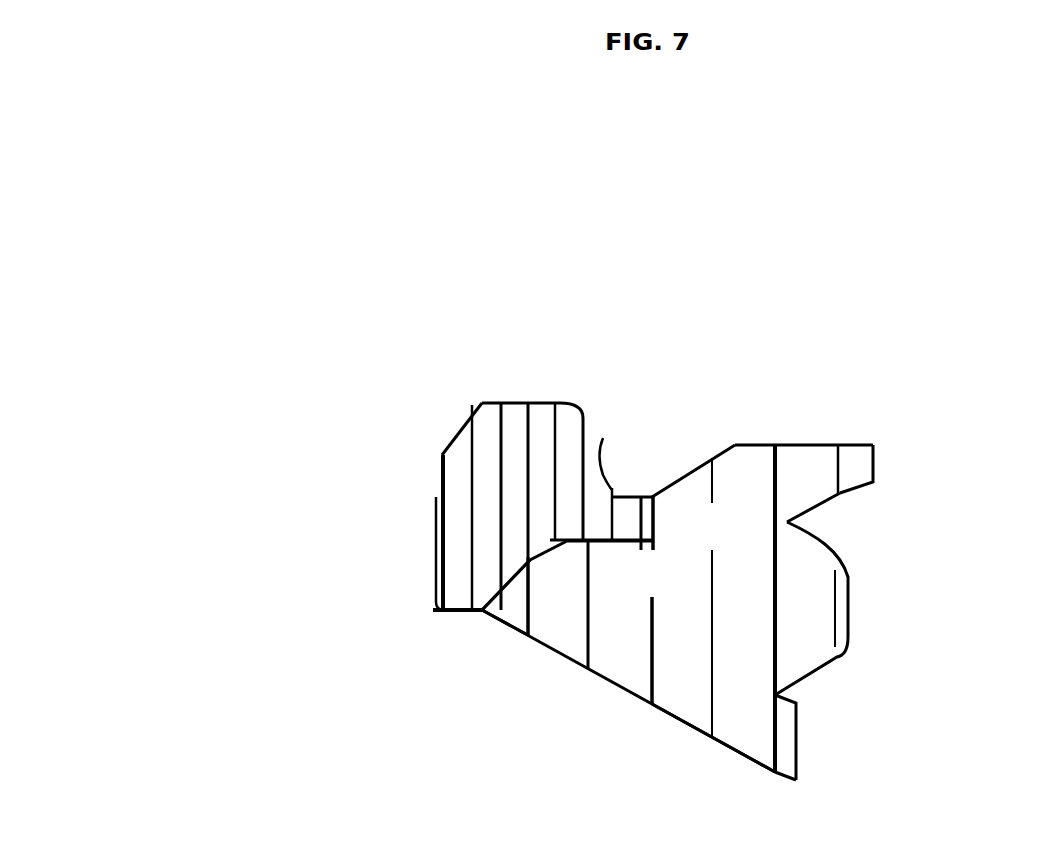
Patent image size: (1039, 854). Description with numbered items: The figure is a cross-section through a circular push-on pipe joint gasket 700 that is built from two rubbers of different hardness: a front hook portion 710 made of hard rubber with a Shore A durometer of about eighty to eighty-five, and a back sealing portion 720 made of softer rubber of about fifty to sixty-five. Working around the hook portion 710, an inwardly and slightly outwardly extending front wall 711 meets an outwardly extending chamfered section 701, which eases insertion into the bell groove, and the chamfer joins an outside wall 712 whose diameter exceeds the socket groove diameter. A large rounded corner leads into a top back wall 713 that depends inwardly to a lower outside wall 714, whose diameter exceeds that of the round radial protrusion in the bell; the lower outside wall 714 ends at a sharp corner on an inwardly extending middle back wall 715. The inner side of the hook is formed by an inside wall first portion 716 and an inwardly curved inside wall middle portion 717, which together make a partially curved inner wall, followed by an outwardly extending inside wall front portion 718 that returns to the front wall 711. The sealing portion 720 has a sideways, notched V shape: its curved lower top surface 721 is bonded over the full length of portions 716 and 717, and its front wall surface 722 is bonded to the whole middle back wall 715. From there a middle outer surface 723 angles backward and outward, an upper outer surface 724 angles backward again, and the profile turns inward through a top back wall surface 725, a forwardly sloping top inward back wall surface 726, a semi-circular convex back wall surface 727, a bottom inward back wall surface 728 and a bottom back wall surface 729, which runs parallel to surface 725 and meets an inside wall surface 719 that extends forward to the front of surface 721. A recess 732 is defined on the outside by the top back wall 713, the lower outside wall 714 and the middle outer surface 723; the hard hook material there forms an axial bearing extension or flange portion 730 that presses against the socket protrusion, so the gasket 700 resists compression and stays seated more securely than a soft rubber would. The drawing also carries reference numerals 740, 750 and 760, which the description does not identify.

The gasket 700 is at (327, 258).
The chamfered section 701 is at (472, 421).
The front hook portion 710 is at (480, 503).
The front wall 711 is at (437, 497).
The outside wall 712 is at (513, 402).
The top back wall 713 is at (603, 433).
The lower outside wall 714 is at (623, 497).
The middle back wall 715 is at (640, 520).
The inside wall first portion 716 is at (608, 535).
The inside wall middle portion 717 is at (530, 558).
The inside wall front portion 718 is at (443, 612).
The inside wall surface 719 is at (760, 762).
The back sealing portion 720 is at (740, 607).
The curved lower top surface 721 is at (548, 547).
The front wall surface 722 is at (653, 512).
The middle outer surface 723 is at (710, 457).
The upper outer surface 724 is at (840, 443).
The top back wall surface 725 is at (875, 463).
The top inward back wall surface 726 is at (810, 510).
The convex back wall surface 727 is at (853, 608).
The bottom inward back wall surface 728 is at (787, 703).
The bottom back wall surface 729 is at (800, 762).
The axial bearing extension 730 is at (630, 498).
The recess 732 is at (617, 487).
The lower neck 740 is at (517, 602).
The side wall 750 is at (455, 592).
The lower rib 760 is at (527, 570).